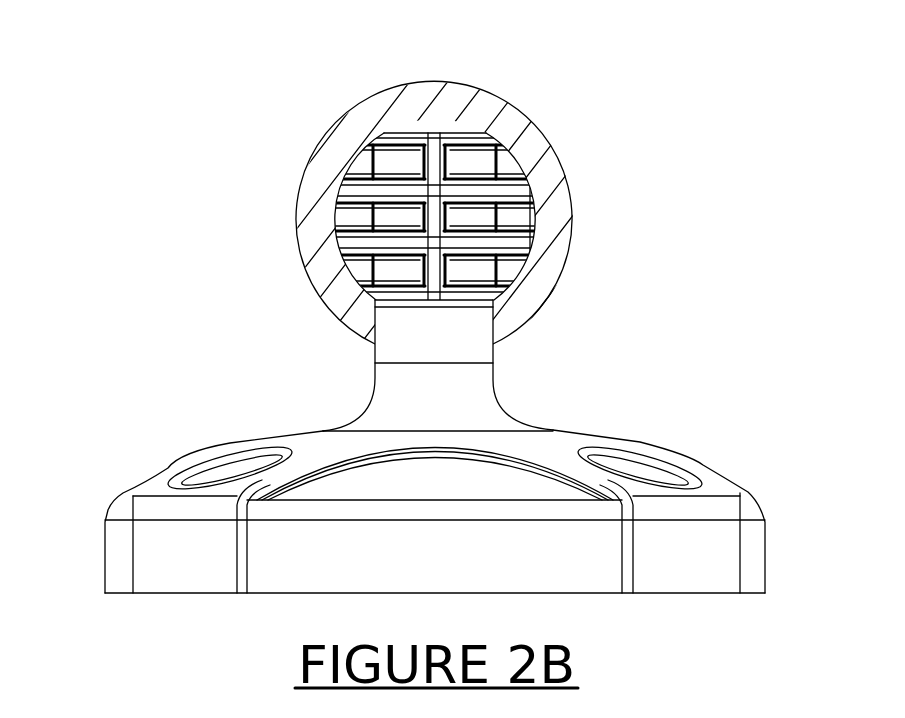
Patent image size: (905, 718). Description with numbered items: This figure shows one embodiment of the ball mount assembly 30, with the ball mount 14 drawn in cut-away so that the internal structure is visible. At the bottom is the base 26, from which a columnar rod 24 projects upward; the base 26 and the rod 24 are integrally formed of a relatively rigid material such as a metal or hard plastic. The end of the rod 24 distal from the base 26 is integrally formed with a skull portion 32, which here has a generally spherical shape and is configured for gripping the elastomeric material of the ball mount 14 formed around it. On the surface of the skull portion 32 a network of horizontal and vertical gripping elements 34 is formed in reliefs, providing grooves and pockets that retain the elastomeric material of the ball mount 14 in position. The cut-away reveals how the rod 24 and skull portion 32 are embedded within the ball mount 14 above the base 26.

The ball mount 14 is at (323, 122).
The ball mount assembly 30 is at (572, 120).
The skull portion 32 is at (543, 210).
The gripping elements 34 is at (355, 163).
The rod 24 is at (503, 367).
The base 26 is at (177, 462).